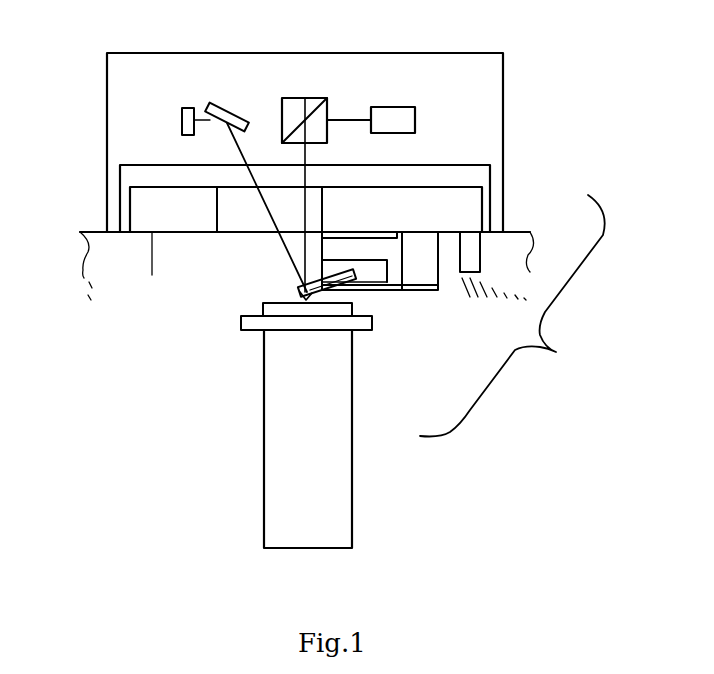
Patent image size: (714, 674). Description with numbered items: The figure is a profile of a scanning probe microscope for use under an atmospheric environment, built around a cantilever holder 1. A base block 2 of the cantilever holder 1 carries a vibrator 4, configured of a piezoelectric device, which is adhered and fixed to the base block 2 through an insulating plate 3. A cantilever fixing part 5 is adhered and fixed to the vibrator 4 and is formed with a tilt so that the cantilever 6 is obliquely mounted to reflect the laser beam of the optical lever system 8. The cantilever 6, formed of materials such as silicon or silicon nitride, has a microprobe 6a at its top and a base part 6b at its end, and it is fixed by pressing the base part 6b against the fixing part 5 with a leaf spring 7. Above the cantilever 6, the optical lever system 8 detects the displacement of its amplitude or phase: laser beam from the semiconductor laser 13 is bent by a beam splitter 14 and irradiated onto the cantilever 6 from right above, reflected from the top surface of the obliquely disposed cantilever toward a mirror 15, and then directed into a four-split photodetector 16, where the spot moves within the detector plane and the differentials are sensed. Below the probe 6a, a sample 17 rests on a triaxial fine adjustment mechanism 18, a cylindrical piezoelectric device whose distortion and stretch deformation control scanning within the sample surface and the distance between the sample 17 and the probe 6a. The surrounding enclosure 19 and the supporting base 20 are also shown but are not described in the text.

The cantilever holder 1 is at (512, 316).
The base block 2 is at (465, 213).
The insulating plate 3 is at (402, 234).
The vibrator 4 is at (377, 252).
The cantilever fixing part 5 is at (378, 275).
The cantilever 6 is at (300, 287).
The microprobe 6a is at (275, 312).
The base part 6b is at (335, 275).
The leaf spring 7 is at (350, 287).
The optical lever system 8 is at (397, 78).
The semiconductor laser 13 is at (405, 117).
The beam splitter 14 is at (305, 92).
The mirror 15 is at (228, 104).
The four-split photodetector 16 is at (182, 120).
The sample 17 is at (265, 340).
The triaxial fine adjustment mechanism 18 is at (337, 455).
The outer housing 19 is at (118, 82).
The base plate 20 is at (97, 262).